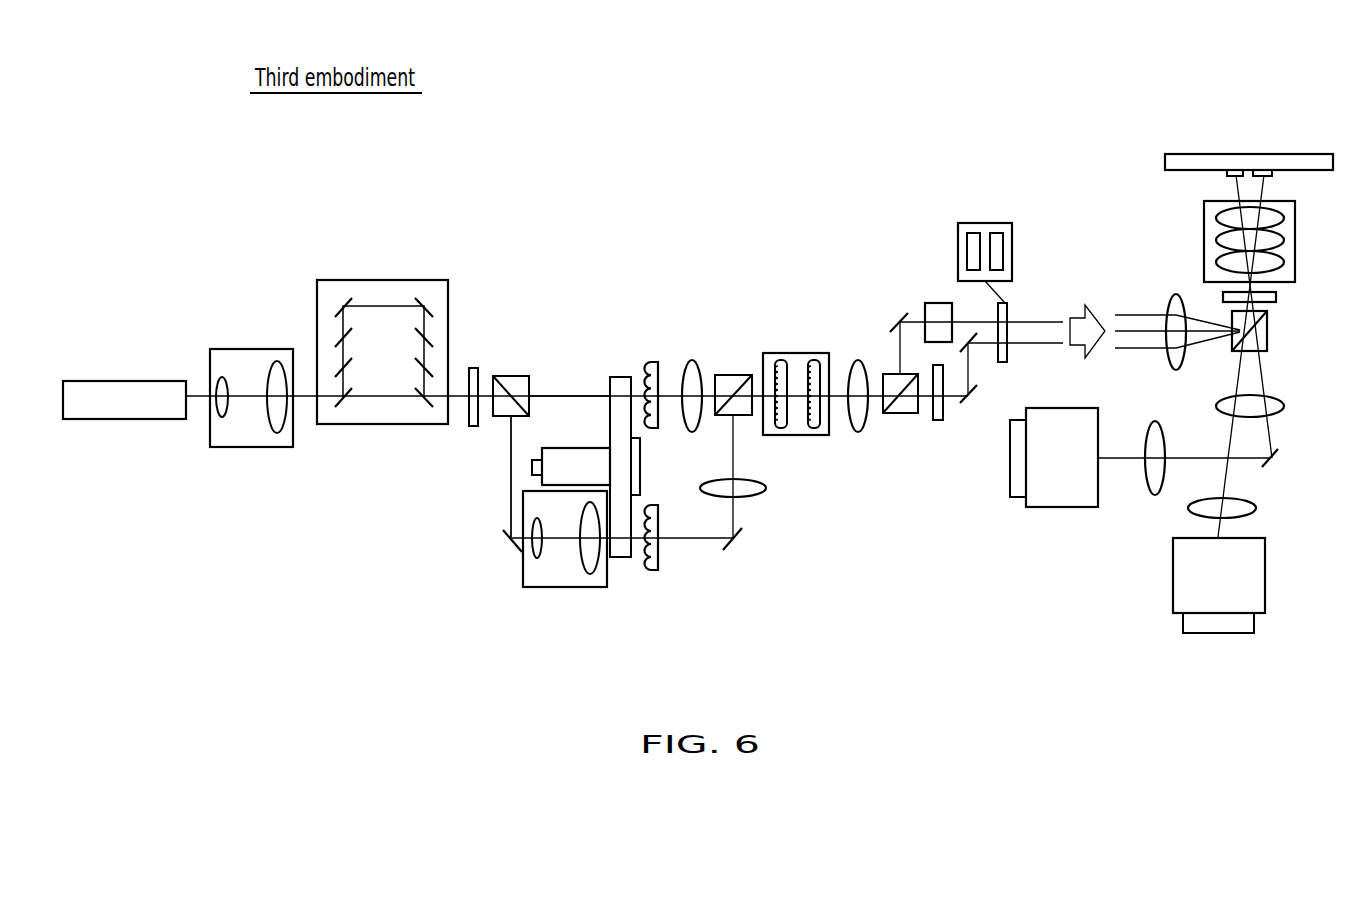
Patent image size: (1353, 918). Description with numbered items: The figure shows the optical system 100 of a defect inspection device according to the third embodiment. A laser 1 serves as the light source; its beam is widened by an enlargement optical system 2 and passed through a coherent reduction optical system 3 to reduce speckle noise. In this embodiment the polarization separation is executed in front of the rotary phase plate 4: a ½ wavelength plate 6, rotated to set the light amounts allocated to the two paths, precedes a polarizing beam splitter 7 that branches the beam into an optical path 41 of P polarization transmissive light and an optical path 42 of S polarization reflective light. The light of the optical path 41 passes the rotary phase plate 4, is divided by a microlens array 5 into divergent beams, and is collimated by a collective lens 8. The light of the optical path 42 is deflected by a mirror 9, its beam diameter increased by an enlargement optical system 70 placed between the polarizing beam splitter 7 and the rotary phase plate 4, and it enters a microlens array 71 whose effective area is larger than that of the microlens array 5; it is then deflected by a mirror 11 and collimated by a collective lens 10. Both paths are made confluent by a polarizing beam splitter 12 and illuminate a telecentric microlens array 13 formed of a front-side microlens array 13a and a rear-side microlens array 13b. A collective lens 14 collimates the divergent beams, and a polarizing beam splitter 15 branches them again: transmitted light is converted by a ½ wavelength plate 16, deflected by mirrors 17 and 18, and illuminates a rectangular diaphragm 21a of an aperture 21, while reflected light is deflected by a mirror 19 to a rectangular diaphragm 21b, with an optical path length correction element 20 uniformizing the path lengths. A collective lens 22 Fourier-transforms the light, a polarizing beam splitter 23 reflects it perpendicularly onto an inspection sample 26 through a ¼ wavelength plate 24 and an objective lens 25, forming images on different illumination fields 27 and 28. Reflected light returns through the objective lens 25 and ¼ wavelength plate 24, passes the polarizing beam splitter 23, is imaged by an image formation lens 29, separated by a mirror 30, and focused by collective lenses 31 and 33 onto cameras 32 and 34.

The laser 1 is at (156, 380).
The enlargement optical system 2 is at (243, 349).
The coherent reduction optical system 3 is at (385, 280).
The rotary phase plate 4 is at (562, 447).
The microlens array 5 is at (651, 362).
The ½ wavelength plate 6 is at (472, 368).
The polarizing beam splitter 7 is at (512, 376).
The collective lens 8 is at (692, 360).
The mirror 9 is at (505, 548).
The collective lens 10 is at (760, 494).
The mirror 11 is at (733, 552).
The polarizing beam splitter 12 is at (734, 375).
The microlens array 13 is at (796, 392).
The front-side microlens array 13a is at (781, 436).
The rear-side microlens array 13b is at (816, 436).
The collective lens 14 is at (858, 360).
The polarizing beam splitter 15 is at (900, 414).
The ½ wavelength plate 16 is at (938, 421).
The mirror 17 is at (968, 405).
The mirror 18 is at (972, 350).
The mirror 19 is at (896, 315).
The optical path length correction element 20 is at (937, 303).
The aperture 21 is at (984, 258).
The rectangular diaphragm 21a is at (972, 232).
The rectangular diaphragm 21b is at (997, 232).
The collective lens 22 is at (1170, 300).
The polarizing beam splitter 23 is at (1268, 333).
The ¼ wavelength plate 24 is at (1277, 297).
The objective lens 25 is at (1203, 242).
The inspection sample 26 is at (1277, 153).
The illumination field 27 is at (1228, 177).
The illumination field 28 is at (1272, 177).
The image formation lens 29 is at (1286, 406).
The mirror 30 is at (1278, 466).
The collective lens 31 is at (1153, 497).
The camera 32 is at (1057, 508).
The collective lens 33 is at (1257, 509).
The camera 34 is at (1267, 575).
The optical path 41 is at (571, 395).
The optical path 42 is at (510, 474).
The enlargement optical system 70 is at (562, 588).
The microlens array 71 is at (650, 571).
The optical system 100 is at (786, 256).